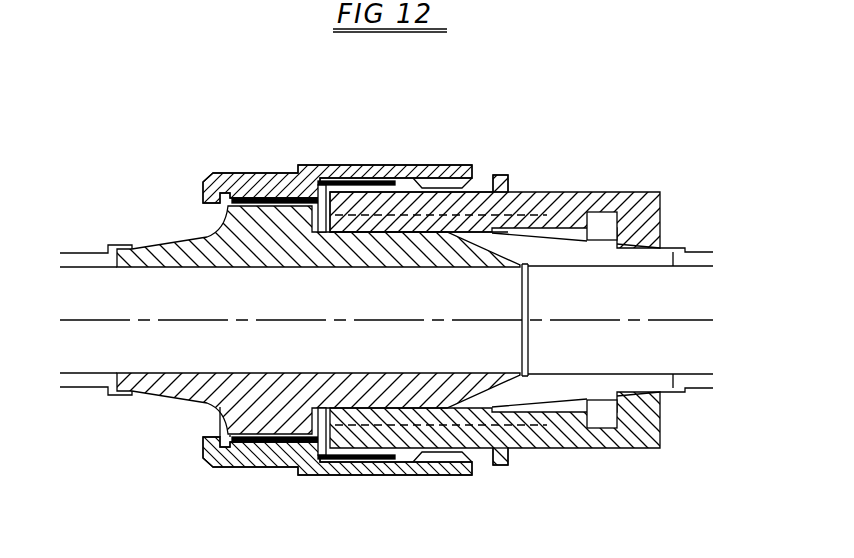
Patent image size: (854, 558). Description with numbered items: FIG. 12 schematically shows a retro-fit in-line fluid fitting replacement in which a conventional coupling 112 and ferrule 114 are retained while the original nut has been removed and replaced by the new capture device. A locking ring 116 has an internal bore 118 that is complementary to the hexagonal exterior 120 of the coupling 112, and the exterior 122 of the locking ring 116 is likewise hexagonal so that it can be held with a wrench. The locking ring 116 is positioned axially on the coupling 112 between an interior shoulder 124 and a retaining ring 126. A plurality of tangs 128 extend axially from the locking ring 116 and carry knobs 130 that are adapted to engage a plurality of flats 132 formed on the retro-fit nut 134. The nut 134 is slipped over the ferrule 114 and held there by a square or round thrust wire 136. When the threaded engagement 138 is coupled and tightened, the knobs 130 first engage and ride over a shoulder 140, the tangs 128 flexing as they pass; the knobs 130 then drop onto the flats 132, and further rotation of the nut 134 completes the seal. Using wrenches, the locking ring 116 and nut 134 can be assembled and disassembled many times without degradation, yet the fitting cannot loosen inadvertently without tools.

The coupling 112 is at (150, 250).
The ferrule 114 is at (628, 253).
The locking ring 116 is at (202, 452).
The internal bore 118 is at (283, 173).
The hexagonal exterior 120 is at (233, 173).
The exterior of the locking ring 122 is at (258, 470).
The interior shoulder 124 is at (317, 440).
The retaining ring 126 is at (232, 430).
The tangs 128 is at (410, 192).
The knobs 130 is at (472, 182).
The flats 132 is at (510, 184).
The nut 134 is at (603, 195).
The thrust wire 136 is at (602, 423).
The threaded engagement 138 is at (381, 180).
The shoulder 140 is at (410, 182).